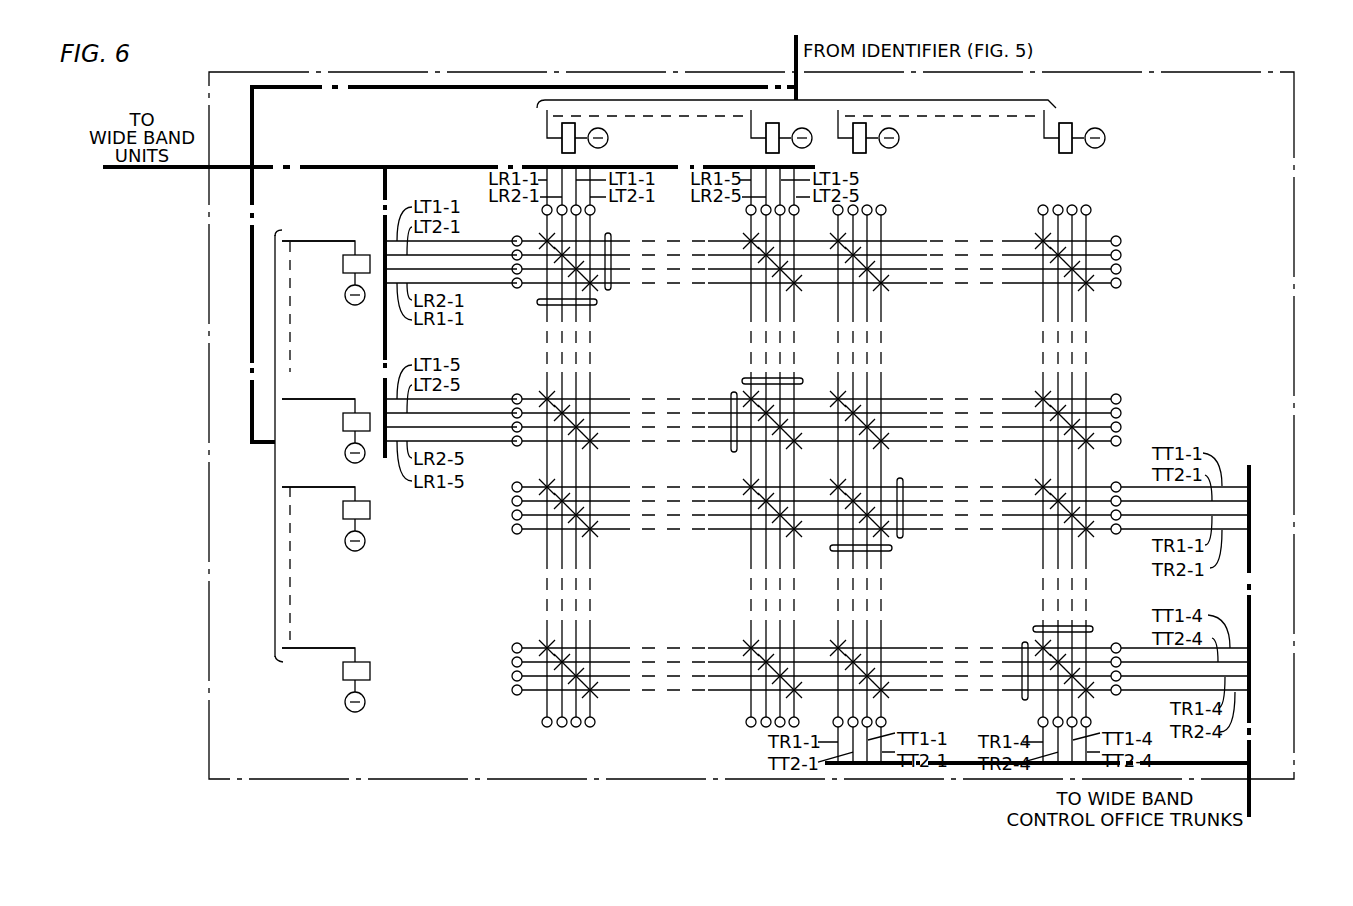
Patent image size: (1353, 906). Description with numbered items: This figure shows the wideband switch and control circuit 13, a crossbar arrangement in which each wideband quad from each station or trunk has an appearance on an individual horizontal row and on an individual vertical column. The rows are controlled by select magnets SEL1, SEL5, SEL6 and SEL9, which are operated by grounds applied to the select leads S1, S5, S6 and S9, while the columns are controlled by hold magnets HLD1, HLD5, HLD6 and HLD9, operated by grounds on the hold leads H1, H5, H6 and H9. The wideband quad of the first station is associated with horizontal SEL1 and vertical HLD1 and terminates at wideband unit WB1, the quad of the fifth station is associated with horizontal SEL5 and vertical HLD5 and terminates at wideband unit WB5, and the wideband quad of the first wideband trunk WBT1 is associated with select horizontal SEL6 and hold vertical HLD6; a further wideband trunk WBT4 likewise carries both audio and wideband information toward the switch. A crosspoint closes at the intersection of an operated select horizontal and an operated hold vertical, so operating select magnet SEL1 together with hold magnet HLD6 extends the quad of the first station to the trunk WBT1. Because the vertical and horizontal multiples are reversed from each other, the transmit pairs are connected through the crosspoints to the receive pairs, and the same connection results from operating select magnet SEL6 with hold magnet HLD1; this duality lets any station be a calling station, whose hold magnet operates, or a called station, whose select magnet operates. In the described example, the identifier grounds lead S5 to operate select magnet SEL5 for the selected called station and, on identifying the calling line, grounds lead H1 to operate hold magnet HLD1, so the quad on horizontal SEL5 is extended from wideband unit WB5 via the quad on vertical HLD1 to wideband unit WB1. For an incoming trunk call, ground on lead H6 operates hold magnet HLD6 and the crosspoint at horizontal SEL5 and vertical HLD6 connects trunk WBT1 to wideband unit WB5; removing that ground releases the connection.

The wideband switch and control circuit 13 is at (751, 425).
The lead H1 is at (567, 130).
The lead H5 is at (769, 130).
The lead H6 is at (857, 130).
The lead H9 is at (1062, 130).
The hold magnet HLD1 is at (546, 142).
The hold magnet HLD5 is at (749, 142).
The hold magnet HLD6 is at (838, 142).
The hold magnet HLD9 is at (1042, 142).
The lead S1 is at (318, 230).
The lead S5 is at (318, 388).
The lead S6 is at (318, 476).
The lead S9 is at (318, 637).
The select magnet SEL1 is at (326, 273).
The select magnet SEL5 is at (326, 431).
The select magnet SEL6 is at (326, 519).
The select magnet SEL9 is at (326, 680).
The wideband unit WB1 is at (597, 302).
The wideband unit WB5 is at (742, 381).
The wideband trunk WBT1 is at (892, 548).
The wideband trunk WBT4 is at (1033, 629).